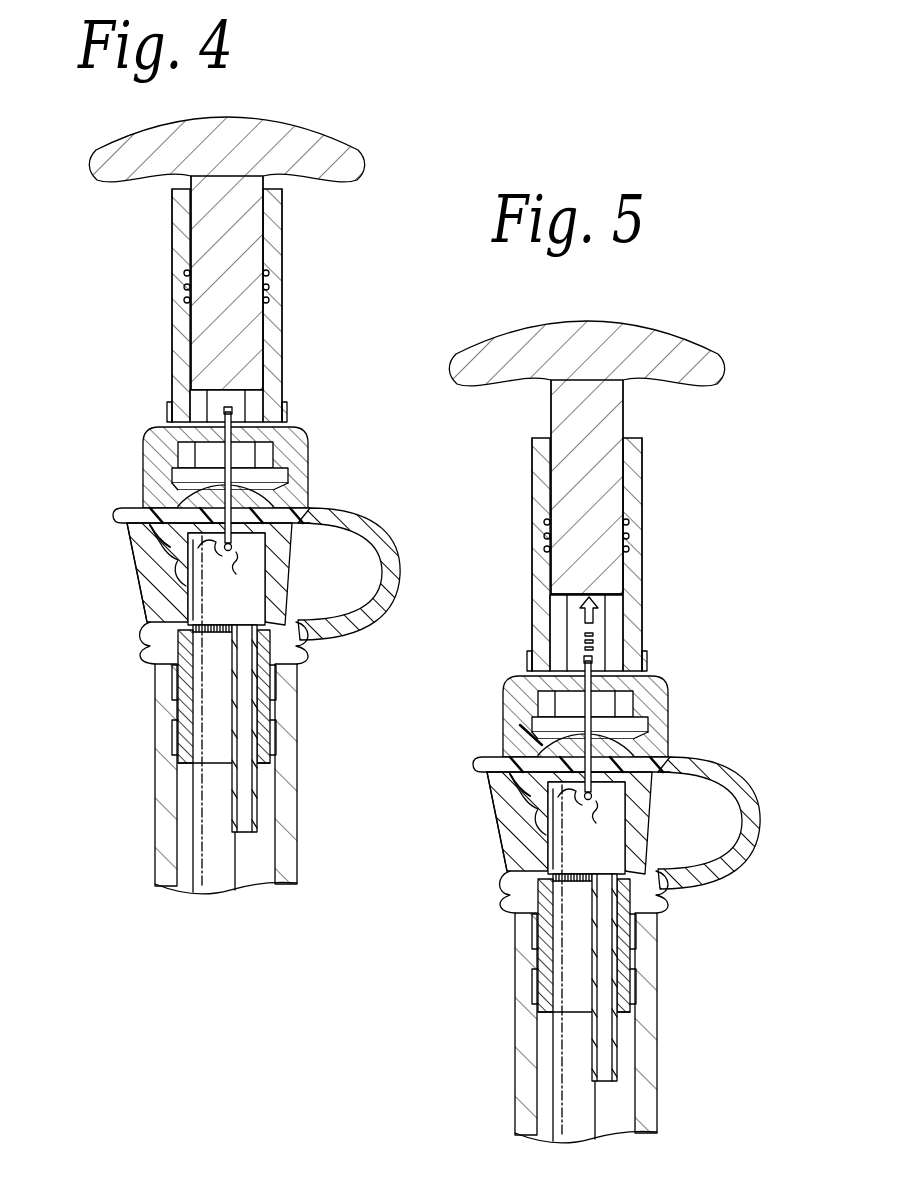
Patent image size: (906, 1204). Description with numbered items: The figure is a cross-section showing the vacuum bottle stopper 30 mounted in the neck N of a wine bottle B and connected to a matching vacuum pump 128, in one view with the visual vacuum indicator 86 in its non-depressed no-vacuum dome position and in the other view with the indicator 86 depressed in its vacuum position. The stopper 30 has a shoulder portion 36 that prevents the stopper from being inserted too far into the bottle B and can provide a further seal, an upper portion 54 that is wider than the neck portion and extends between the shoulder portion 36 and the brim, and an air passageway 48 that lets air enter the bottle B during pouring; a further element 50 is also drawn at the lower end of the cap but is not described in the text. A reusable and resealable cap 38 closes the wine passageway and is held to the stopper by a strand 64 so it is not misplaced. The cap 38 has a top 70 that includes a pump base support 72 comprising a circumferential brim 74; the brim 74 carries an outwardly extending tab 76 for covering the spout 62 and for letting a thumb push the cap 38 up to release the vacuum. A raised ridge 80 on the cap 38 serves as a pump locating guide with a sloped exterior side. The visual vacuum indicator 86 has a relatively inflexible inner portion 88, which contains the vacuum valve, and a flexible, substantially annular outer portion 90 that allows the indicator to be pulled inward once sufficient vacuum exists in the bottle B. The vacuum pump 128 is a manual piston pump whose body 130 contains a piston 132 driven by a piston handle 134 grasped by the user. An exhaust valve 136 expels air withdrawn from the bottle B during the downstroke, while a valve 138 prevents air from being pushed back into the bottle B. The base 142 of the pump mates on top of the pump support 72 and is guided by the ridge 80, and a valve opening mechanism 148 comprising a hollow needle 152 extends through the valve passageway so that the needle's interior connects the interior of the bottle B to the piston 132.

In FIG. 4, the piston handle 134 is at (290, 118).
In FIG. 5, the piston handle 134 is at (586, 424).
In FIG. 4, the piston 132 is at (244, 294).
In FIG. 5, the piston 132 is at (587, 487).
In FIG. 4, the body 130 is at (282, 327).
In FIG. 5, the body 130 is at (641, 554).
In FIG. 4, the vacuum pump 128 is at (148, 235).
In FIG. 5, the vacuum pump 128 is at (667, 554).
In FIG. 4, the exhaust valve 136 is at (167, 408).
In FIG. 5, the exhaust valve 136 is at (654, 644).
In FIG. 4, the valve 138 is at (231, 412).
In FIG. 5, the valve 138 is at (667, 694).
In FIG. 4, the valve opening mechanism 148 is at (255, 440).
In FIG. 5, the valve opening mechanism 148 is at (624, 697).
In FIG. 4, the visual vacuum indicator 86 is at (305, 435).
In FIG. 5, the visual vacuum indicator 86 is at (635, 706).
In FIG. 4, the base 142 is at (146, 440).
In FIG. 5, the base 142 is at (661, 711).
In FIG. 4, the top 70 is at (253, 490).
In FIG. 5, the top 70 is at (585, 753).
In FIG. 4, the pump base support 72 is at (145, 497).
In FIG. 5, the pump base support 72 is at (632, 746).
In FIG. 4, the circumferential brim 74 is at (295, 505).
In FIG. 5, the circumferential brim 74 is at (536, 738).
In FIG. 4, the tab 76 is at (130, 517).
In FIG. 5, the tab 76 is at (467, 766).
In FIG. 4, the spout 62 is at (128, 535).
In FIG. 5, the spout 62 is at (475, 803).
In FIG. 4, the strand 64 is at (375, 530).
In FIG. 5, the strand 64 is at (741, 813).
In FIG. 4, the upper portion 54 is at (140, 578).
In FIG. 5, the upper portion 54 is at (533, 823).
In FIG. 4, the vacuum bottle stopper 30 is at (131, 605).
In FIG. 5, the vacuum bottle stopper 30 is at (461, 839).
In FIG. 4, the shoulder portion 36 is at (145, 638).
In FIG. 5, the shoulder portion 36 is at (543, 903).
In FIG. 4, the cap 38 is at (226, 604).
In FIG. 5, the cap 38 is at (586, 959).
In FIG. 4, the inner portion 88 is at (207, 556).
In FIG. 4, the outer portion 90 is at (232, 549).
In FIG. 4, the hollow needle 152 is at (246, 570).
In FIG. 5, the hollow needle 152 is at (660, 812).
In FIG. 4, the serrations 50 is at (226, 609).
In FIG. 5, the serrations 50 is at (587, 862).
In FIG. 4, the air passageway 48 is at (243, 813).
In FIG. 5, the air passageway 48 is at (669, 990).
In FIG. 5, the raised ridge 80 is at (494, 709).
In FIG. 4, the neck N is at (300, 690).
In FIG. 5, the neck N is at (527, 945).
In FIG. 4, the wine bottle B is at (153, 800).
In FIG. 5, the wine bottle B is at (635, 1028).